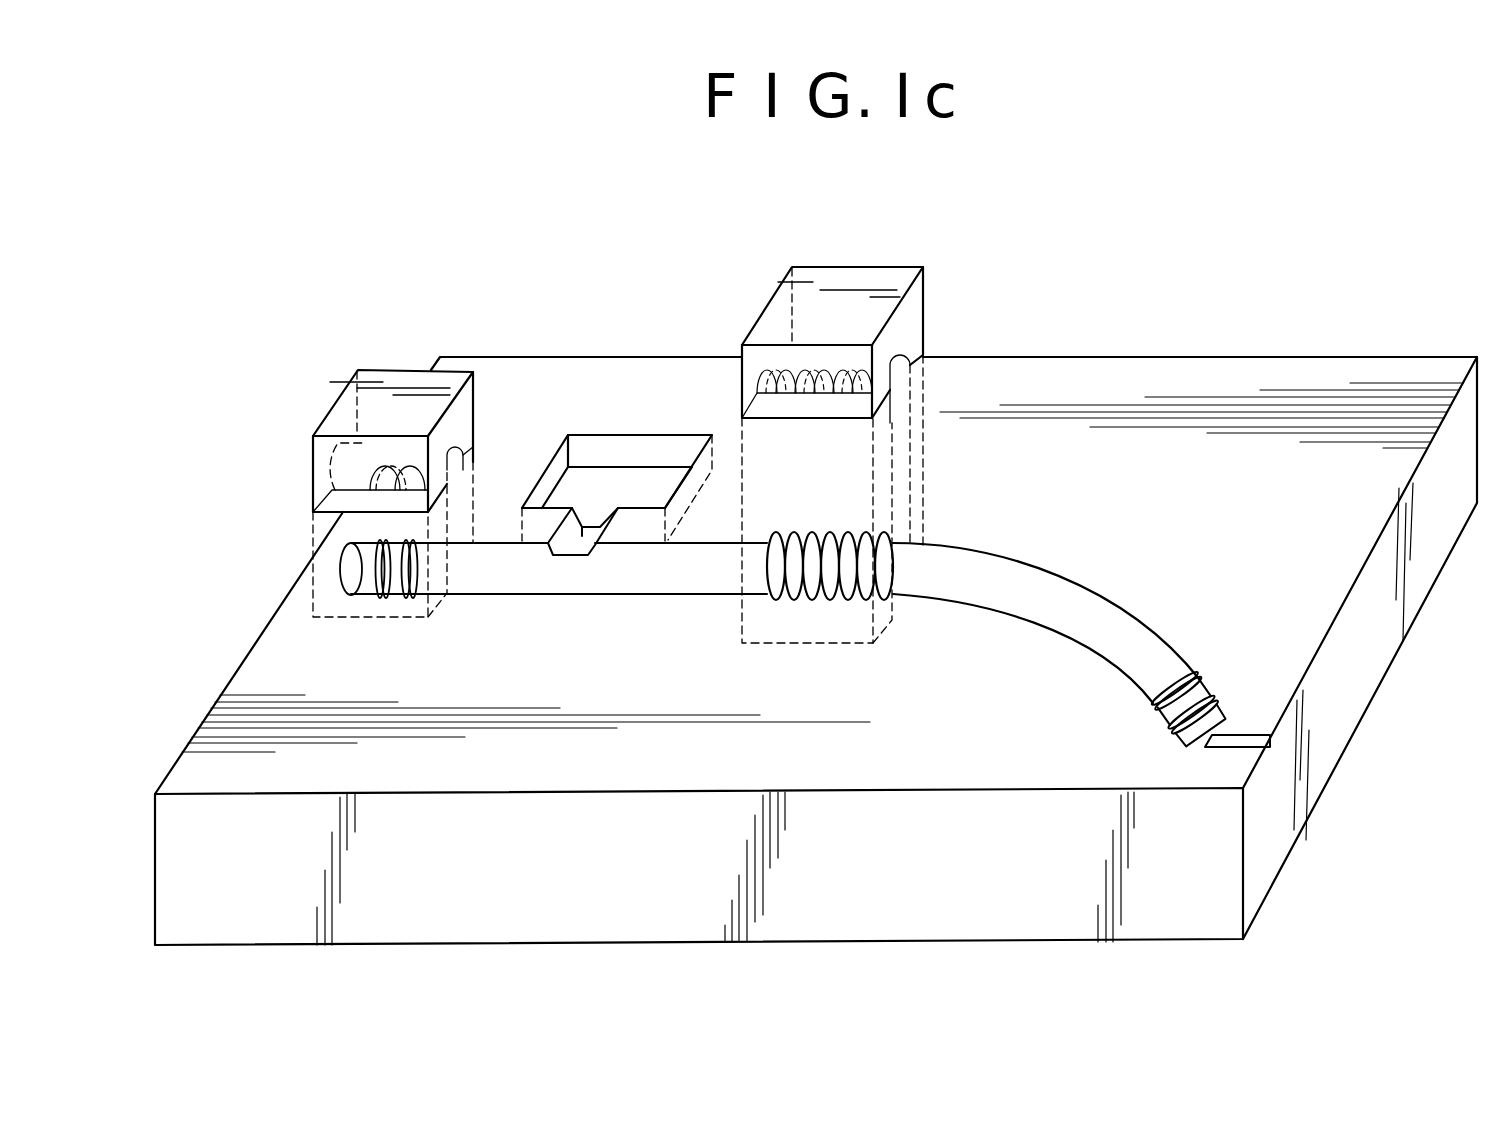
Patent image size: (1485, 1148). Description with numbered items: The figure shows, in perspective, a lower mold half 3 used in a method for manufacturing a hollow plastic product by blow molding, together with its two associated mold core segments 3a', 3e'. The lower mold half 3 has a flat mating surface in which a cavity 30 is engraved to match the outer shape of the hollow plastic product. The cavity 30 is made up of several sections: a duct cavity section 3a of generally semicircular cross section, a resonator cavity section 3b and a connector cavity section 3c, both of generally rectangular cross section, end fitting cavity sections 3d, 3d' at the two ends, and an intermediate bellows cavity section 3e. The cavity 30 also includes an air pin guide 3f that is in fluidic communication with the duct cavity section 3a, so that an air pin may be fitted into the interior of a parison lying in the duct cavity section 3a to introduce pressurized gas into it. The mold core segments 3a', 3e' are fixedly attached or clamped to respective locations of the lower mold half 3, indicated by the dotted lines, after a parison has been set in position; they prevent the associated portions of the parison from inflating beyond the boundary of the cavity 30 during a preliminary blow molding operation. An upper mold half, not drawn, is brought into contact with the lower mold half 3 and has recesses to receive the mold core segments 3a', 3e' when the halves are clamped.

The lower mold half 3 is at (1260, 372).
The duct cavity section 3a is at (693, 614).
The mold core segment 3a' is at (376, 473).
The resonator cavity section 3b is at (628, 480).
The connector cavity section 3c is at (580, 533).
The end fitting cavity section 3d is at (327, 569).
The end fitting cavity section 3d' is at (1153, 724).
The intermediate bellows cavity section 3e is at (819, 617).
The mold core segment 3e' is at (858, 429).
The air pin guide 3f is at (1240, 735).
The cavity 30 is at (997, 583).